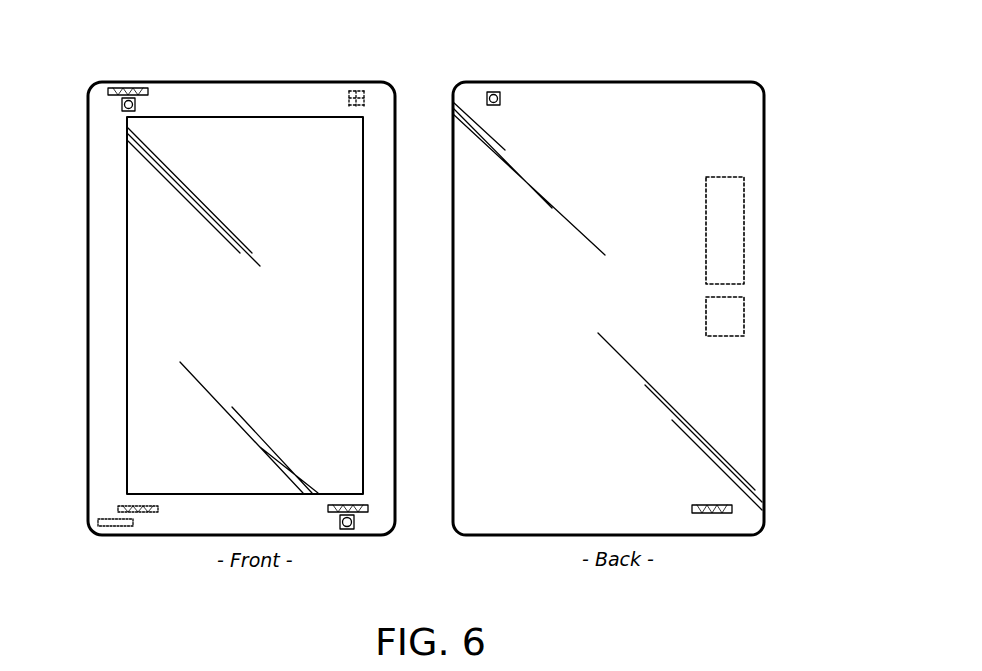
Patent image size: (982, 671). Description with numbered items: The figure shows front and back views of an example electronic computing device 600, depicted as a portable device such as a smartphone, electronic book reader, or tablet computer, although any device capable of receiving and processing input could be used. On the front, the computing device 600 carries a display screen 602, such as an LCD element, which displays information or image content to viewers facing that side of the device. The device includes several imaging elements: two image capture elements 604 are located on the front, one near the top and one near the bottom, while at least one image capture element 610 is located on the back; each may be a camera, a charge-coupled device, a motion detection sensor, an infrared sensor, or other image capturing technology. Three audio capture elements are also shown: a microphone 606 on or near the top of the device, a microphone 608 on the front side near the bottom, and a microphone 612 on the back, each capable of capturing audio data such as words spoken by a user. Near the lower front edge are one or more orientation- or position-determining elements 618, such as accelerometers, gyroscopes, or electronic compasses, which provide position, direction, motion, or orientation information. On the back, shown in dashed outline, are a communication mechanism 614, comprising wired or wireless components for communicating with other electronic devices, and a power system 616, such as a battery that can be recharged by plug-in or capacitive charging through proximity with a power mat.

The electronic computing device 600 is at (790, 89).
The display screen 602 is at (126, 225).
The image capture elements 604 is at (121, 104).
The microphone 606 is at (138, 88).
The microphone 608 is at (360, 512).
The image capture element 610 is at (355, 90).
The microphone 612 is at (138, 512).
The communication mechanism 614 is at (744, 247).
The power system 616 is at (744, 318).
The orientation- or position-determining elements 618 is at (113, 527).